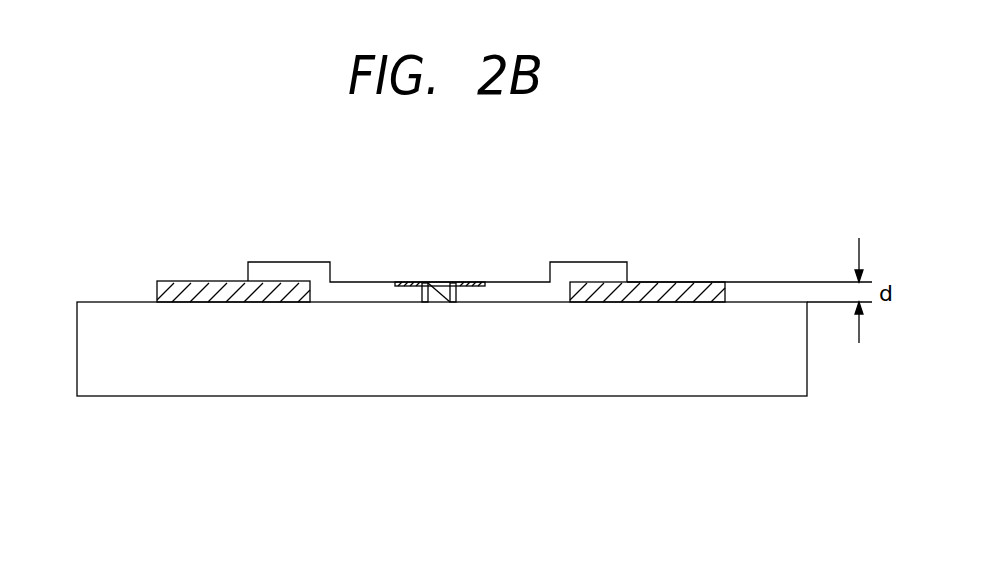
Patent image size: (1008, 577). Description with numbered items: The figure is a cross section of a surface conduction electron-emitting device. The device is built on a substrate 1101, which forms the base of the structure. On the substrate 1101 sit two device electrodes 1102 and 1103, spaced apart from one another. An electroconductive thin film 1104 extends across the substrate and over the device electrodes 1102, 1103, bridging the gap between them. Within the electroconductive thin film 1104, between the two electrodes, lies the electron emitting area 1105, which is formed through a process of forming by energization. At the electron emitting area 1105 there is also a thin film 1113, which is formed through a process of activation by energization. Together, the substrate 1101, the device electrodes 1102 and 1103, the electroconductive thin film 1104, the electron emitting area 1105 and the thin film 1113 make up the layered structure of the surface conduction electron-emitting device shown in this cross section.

The substrate 1101 is at (729, 385).
The device electrode 1102 is at (690, 283).
The device electrode 1103 is at (190, 285).
The electroconductive thin film 1104 is at (350, 285).
The electron emitting area 1105 is at (437, 283).
The thin film 1113 is at (465, 283).